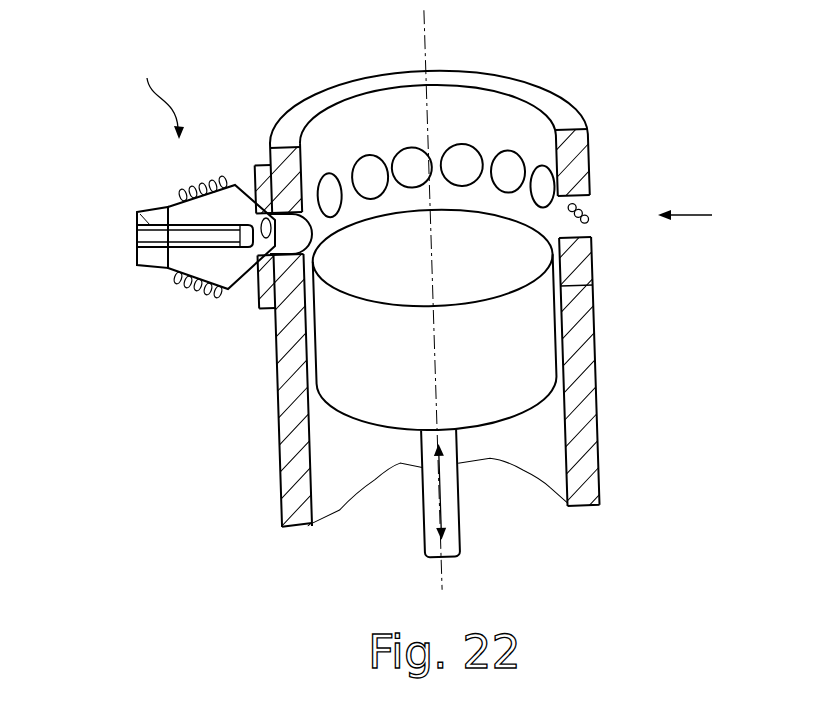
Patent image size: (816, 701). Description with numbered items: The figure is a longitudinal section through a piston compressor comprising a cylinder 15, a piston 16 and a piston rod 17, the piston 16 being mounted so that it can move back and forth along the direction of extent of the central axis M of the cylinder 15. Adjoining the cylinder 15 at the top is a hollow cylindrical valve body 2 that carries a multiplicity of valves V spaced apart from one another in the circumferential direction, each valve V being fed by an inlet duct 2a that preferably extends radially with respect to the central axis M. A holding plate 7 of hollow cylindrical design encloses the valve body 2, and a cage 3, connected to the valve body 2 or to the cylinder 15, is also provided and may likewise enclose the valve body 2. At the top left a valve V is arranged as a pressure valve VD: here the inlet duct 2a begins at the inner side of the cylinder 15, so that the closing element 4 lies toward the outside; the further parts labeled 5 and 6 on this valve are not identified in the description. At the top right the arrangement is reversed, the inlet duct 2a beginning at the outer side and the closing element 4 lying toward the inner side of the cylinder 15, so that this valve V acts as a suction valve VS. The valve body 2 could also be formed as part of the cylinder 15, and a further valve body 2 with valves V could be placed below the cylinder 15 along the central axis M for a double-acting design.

The valve body 2 is at (287, 153).
The inlet duct 2a is at (304, 232).
The cage 3 is at (152, 258).
The closing element 4 is at (270, 233).
The thread 5 is at (293, 244).
The nozzle channel 6 is at (146, 233).
The holding plate 7 is at (273, 294).
The cylinder 15 is at (567, 352).
The piston 16 is at (481, 381).
The piston rod 17 is at (451, 514).
The central axis M is at (424, 30).
The valve V is at (507, 170).
The suction valve VS is at (706, 215).
The pressure valve VD is at (153, 90).